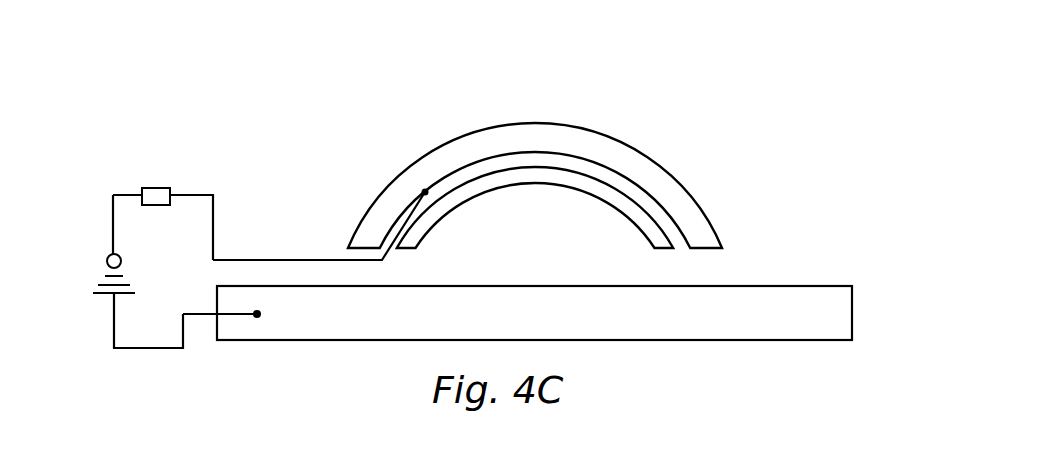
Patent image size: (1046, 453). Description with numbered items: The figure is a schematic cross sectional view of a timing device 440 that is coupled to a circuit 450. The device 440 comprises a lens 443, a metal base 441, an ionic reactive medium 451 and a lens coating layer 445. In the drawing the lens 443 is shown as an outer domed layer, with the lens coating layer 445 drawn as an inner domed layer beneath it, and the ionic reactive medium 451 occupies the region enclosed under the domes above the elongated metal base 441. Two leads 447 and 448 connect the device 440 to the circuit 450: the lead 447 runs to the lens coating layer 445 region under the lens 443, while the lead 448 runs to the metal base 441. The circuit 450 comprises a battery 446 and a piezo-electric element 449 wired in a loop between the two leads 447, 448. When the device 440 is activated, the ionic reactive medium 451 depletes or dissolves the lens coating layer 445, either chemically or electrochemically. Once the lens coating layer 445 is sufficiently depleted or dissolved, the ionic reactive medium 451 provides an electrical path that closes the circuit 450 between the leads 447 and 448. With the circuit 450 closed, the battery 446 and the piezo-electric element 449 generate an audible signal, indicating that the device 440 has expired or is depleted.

The timing device 440 is at (242, 113).
The metal base 441 is at (852, 312).
The lens 443 is at (620, 142).
The lens coating layer 445 is at (628, 210).
The battery 446 is at (110, 293).
The lead 447 is at (290, 257).
The lead 448 is at (237, 318).
The piezo-electric element 449 is at (155, 188).
The circuit 450 is at (237, 378).
The ionic reactive medium 451 is at (549, 250).